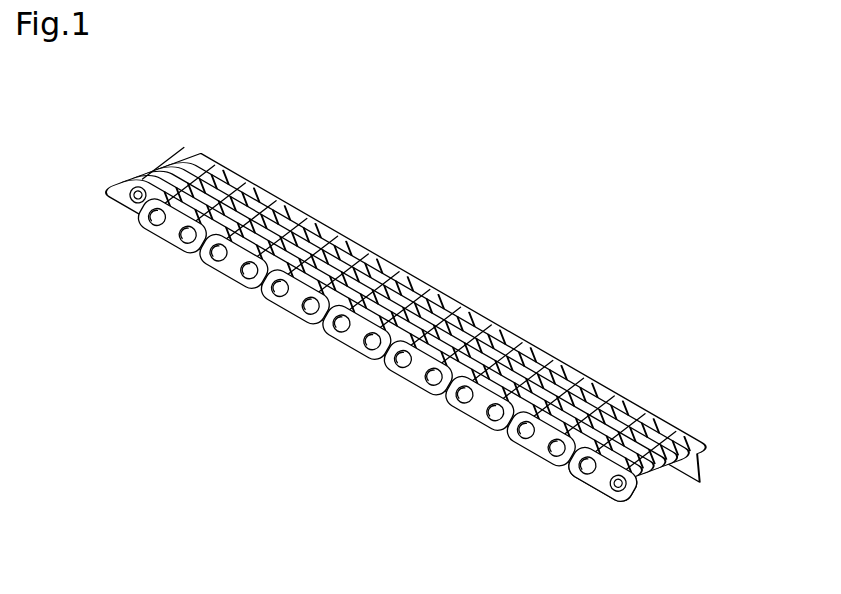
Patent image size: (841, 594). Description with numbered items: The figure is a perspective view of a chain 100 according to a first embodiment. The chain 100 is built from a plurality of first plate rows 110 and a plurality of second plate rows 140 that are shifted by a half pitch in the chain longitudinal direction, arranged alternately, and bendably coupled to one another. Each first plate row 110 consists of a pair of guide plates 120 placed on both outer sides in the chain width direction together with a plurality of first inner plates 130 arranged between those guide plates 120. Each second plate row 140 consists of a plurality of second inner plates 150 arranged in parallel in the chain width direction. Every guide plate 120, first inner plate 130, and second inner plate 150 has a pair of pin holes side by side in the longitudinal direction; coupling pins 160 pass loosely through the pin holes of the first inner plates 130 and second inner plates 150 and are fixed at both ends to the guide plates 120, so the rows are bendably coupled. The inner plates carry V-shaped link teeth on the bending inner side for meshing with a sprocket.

The chain 100 is at (626, 148).
The first plate row 110 is at (318, 201).
The guide plate 120 is at (625, 497).
The first inner plate 130 is at (667, 483).
The second plate row 140 is at (147, 93).
The second inner plate 150 is at (178, 162).
The coupling pin 160 is at (458, 400).